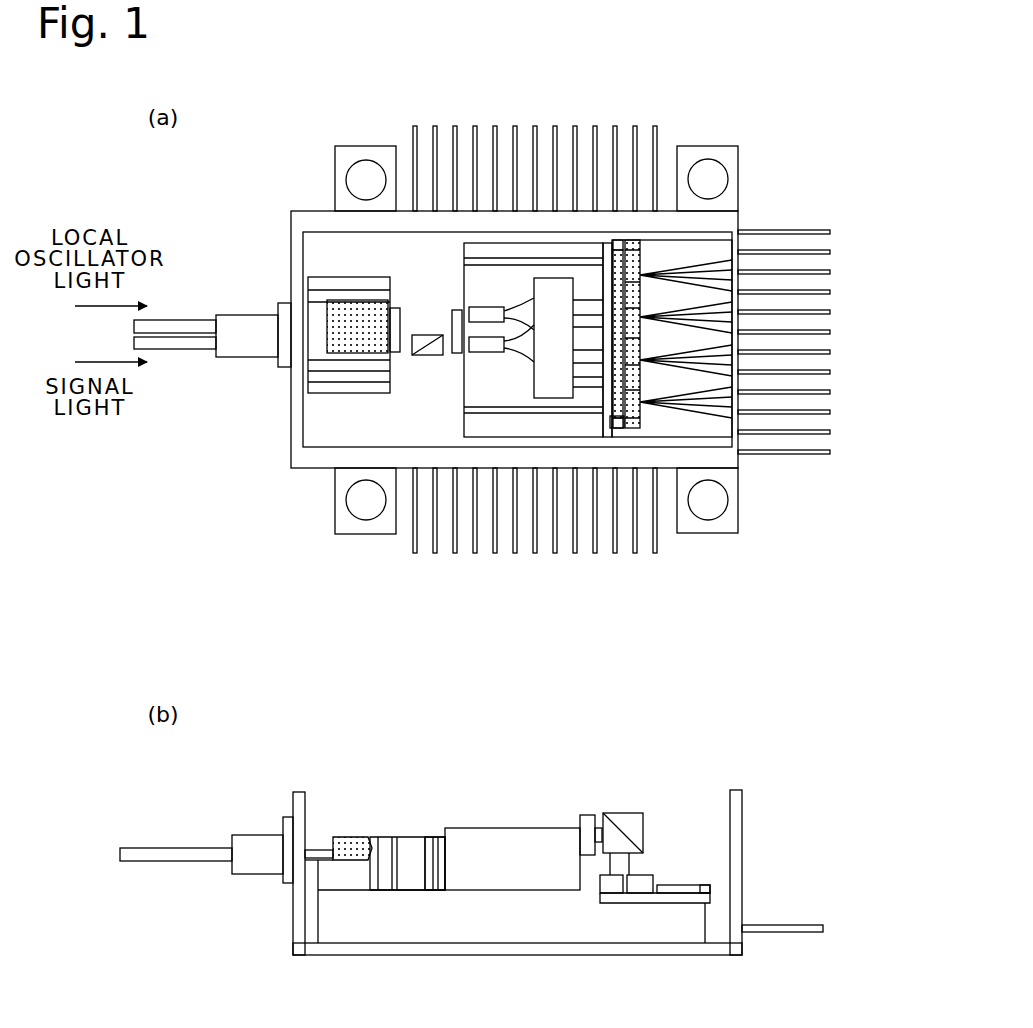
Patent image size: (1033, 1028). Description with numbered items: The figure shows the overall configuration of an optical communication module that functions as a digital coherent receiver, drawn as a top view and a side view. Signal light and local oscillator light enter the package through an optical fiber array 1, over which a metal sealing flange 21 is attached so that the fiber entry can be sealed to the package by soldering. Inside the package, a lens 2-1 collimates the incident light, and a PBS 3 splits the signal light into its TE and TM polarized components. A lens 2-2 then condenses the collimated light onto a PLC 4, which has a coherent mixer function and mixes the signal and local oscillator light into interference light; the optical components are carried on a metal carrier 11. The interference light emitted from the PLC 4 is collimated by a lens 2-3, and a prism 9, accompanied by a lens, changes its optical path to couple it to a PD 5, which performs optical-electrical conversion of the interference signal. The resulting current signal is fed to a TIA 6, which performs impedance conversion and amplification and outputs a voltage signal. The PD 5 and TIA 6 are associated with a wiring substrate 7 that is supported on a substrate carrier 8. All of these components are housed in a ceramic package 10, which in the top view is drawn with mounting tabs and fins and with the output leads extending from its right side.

The optical fiber array 1 is at (187, 320).
The sealing flange 21 is at (238, 340).
The lens 2-1 is at (362, 357).
The PBS (Polarization Beam Splitter) 3 is at (418, 355).
The lens 2-2 is at (458, 355).
The PLC (Planar Lightwave Circuit) 4 is at (502, 390).
The metal carrier 11 is at (415, 430).
The lens 2-3 is at (606, 380).
The prism 9 is at (612, 418).
The PD (Photo Diode) 5 is at (618, 430).
The TIA 6 is at (632, 440).
The wiring substrate 7 is at (658, 412).
The substrate carrier 8 is at (718, 440).
The ceramic package 10 is at (748, 468).